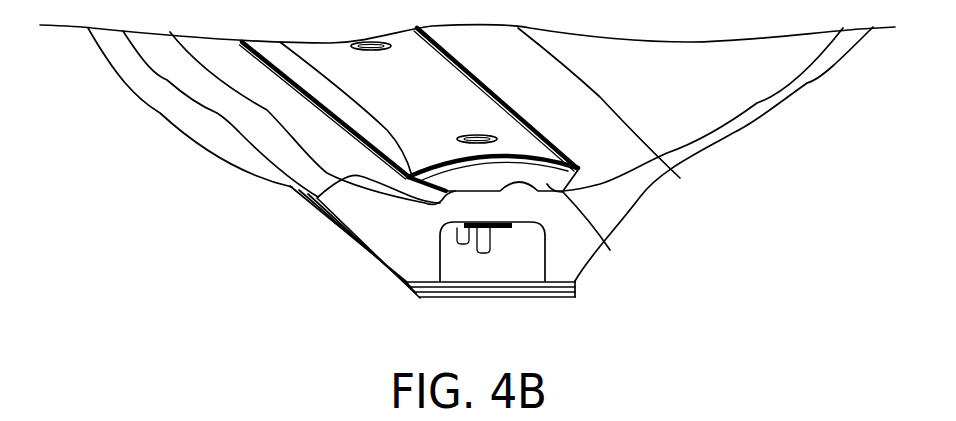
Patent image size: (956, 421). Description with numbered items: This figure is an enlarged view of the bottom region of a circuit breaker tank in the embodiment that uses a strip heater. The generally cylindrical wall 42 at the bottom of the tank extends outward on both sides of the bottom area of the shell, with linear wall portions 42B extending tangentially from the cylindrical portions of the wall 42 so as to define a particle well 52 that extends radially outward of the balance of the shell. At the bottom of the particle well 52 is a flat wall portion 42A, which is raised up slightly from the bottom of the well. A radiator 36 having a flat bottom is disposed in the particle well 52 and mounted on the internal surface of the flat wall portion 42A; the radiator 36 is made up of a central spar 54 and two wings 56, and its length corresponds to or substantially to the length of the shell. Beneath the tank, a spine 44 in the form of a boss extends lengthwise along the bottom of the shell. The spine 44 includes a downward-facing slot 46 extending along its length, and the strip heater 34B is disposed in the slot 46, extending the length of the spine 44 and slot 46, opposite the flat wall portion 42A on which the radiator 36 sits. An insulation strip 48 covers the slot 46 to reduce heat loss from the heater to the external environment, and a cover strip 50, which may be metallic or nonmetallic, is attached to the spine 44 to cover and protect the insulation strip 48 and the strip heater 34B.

The radiator 36 is at (558, 93).
The wall 42 is at (218, 113).
The flat wall portion 42A is at (595, 248).
The linear wall portions 42B is at (318, 197).
The spine 44 is at (363, 248).
The slot 46 is at (543, 265).
The insulation strip 48 is at (577, 288).
The cover strip 50 is at (460, 298).
The particle well 52 is at (345, 152).
The central spar 54 is at (502, 176).
The wings 56 is at (375, 140).
The strip heater 34B is at (497, 229).